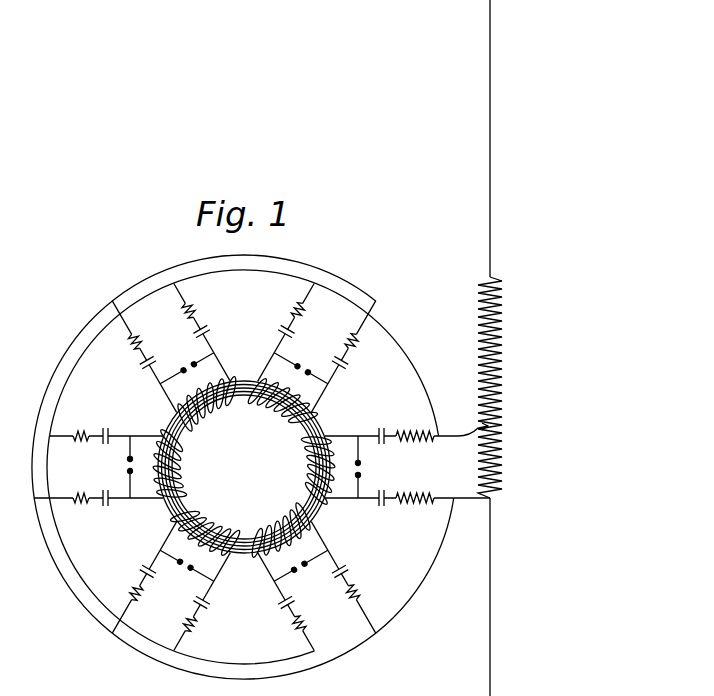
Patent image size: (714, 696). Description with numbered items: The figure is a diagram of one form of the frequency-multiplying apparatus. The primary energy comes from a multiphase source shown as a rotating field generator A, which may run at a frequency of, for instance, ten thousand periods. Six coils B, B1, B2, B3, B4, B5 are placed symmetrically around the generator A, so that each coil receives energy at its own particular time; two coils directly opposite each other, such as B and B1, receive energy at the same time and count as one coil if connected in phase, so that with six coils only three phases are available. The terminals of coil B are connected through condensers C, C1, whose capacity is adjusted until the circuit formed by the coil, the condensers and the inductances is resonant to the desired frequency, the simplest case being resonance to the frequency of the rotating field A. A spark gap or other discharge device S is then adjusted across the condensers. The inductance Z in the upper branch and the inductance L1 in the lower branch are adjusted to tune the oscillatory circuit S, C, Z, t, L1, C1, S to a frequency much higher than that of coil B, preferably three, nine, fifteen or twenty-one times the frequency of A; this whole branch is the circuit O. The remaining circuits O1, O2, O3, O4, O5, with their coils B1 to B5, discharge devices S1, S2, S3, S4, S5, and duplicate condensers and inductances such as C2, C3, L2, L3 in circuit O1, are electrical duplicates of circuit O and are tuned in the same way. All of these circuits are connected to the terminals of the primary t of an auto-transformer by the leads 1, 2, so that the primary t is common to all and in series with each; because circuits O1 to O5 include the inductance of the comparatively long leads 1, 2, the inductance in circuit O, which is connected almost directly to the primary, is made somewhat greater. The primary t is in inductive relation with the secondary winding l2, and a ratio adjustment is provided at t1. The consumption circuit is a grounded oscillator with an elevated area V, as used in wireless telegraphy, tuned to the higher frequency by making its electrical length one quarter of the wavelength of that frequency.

The lead 1 is at (154, 278).
The lead 2 is at (263, 272).
The rotating field generator A is at (244, 467).
The coil B is at (329, 471).
The coil B1 is at (158, 463).
The coil B2 is at (283, 543).
The coil B3 is at (205, 391).
The coil B4 is at (198, 539).
The coil B5 is at (291, 395).
The spark gap or discharge device S is at (365, 468).
The discharge device S1 is at (119, 464).
The discharge device S2 is at (304, 576).
The discharge device S3 is at (186, 356).
The discharge device S4 is at (179, 574).
The discharge device S5 is at (308, 359).
The circuit O is at (391, 467).
The circuit O1 is at (98, 467).
The circuit O2 is at (317, 593).
The circuit O3 is at (171, 341).
The circuit O4 is at (171, 593).
The circuit O5 is at (317, 341).
The condenser C is at (379, 422).
The condenser C1 is at (379, 514).
The condenser C2 is at (116, 509).
The condenser C3 is at (115, 425).
The resistance Z is at (415, 423).
The inductance L1 is at (415, 514).
The inductance L2 is at (79, 510).
The inductance L3 is at (81, 423).
The primary t is at (471, 476).
The ratio adjustment t1 is at (470, 421).
The resistance winding l2 is at (474, 387).
The elevated area V is at (490, 205).